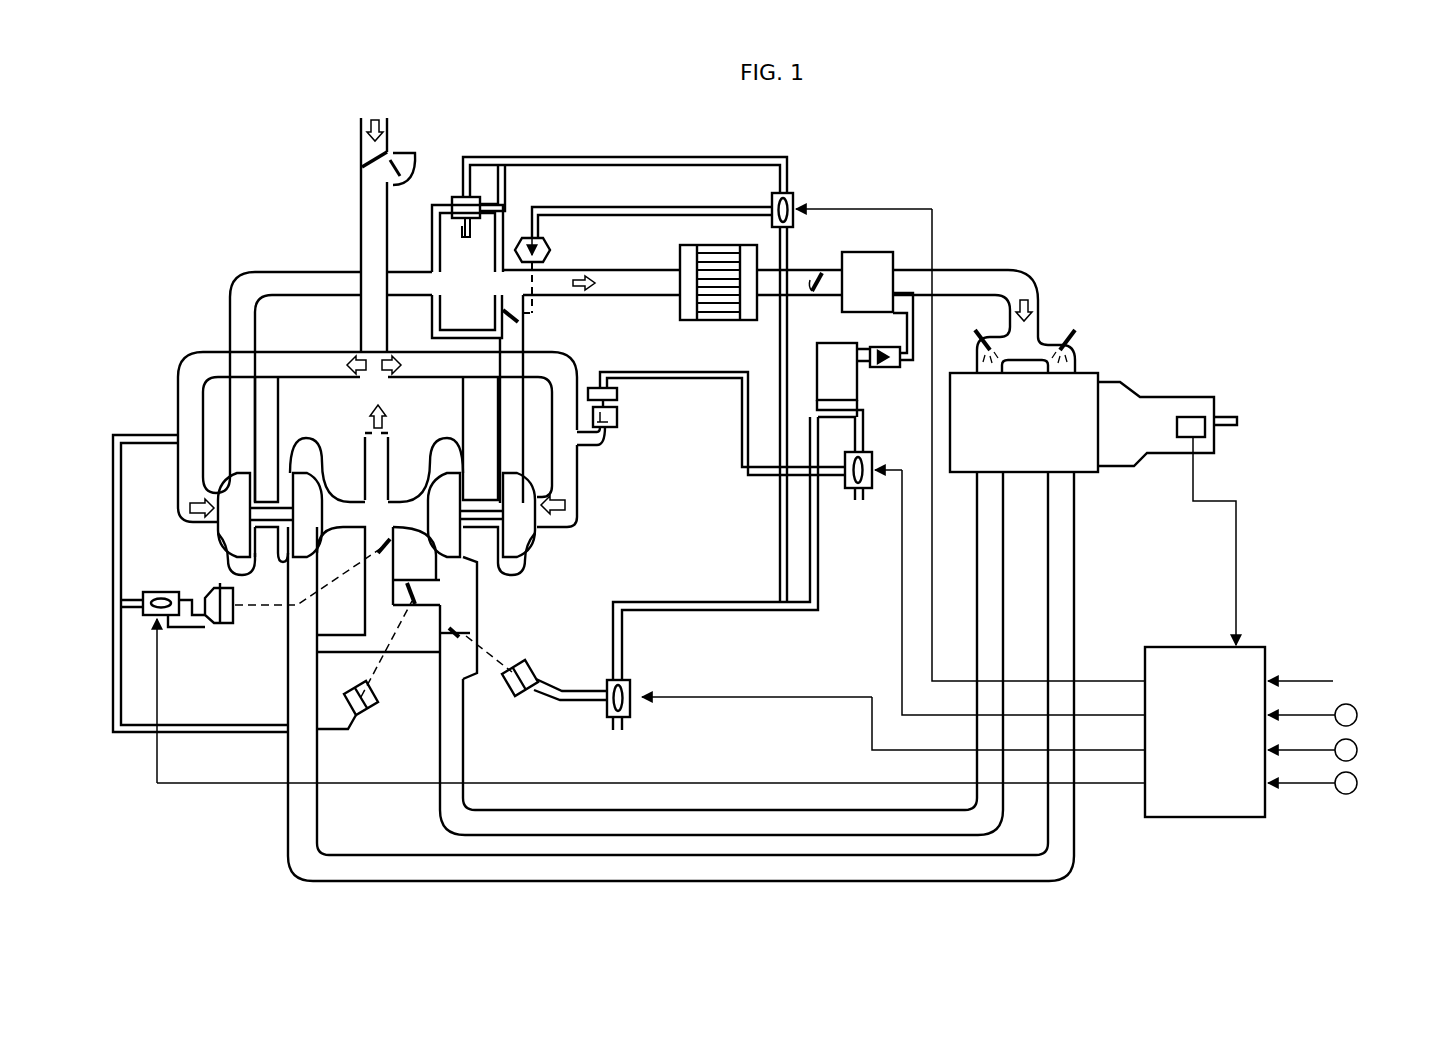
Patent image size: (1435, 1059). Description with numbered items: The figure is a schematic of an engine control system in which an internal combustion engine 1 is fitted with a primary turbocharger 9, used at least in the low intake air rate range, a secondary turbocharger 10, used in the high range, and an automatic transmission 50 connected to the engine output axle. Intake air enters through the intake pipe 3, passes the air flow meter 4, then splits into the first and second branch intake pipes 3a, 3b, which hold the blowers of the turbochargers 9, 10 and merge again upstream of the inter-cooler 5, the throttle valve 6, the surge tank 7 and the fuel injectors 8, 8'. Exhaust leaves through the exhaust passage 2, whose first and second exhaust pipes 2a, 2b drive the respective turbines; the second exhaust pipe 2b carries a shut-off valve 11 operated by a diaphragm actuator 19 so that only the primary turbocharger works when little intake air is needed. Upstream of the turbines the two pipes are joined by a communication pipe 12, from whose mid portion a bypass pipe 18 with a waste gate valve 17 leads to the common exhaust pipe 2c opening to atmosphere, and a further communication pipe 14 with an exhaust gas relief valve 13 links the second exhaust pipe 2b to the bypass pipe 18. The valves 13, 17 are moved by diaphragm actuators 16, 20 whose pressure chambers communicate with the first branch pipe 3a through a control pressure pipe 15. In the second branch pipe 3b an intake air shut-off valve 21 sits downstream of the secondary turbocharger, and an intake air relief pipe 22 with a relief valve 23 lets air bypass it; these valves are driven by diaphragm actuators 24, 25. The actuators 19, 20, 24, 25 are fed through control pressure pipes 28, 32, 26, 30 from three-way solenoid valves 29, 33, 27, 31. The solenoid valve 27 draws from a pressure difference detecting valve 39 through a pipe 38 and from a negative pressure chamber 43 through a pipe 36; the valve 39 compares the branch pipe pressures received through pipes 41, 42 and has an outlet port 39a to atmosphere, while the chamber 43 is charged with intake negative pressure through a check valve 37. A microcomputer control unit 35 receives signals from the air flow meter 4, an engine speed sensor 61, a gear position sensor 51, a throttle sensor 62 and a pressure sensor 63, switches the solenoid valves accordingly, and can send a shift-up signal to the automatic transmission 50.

The internal combustion engine 1 is at (1024, 422).
The exhaust passage 2 is at (1143, 547).
The first exhaust pipe 2a is at (288, 693).
The second exhaust pipe 2b is at (465, 752).
The common exhaust pipe 2c is at (392, 440).
The intake pipe 3 is at (361, 197).
The first branch intake pipe 3a is at (230, 298).
The second branch intake pipe 3b is at (575, 357).
The air flow meter 4 is at (412, 150).
The inter-cooler 5 is at (706, 320).
The throttle valve 6 is at (818, 277).
The surge tank 7 is at (858, 252).
The fuel injectors 8 is at (969, 346).
The fuel injector 8' is at (1063, 318).
The primary supercharger 9 is at (272, 495).
The secondary supercharger 10 is at (481, 492).
The shut-off valve 11 is at (472, 634).
The communication pipe 12 is at (412, 653).
The exhaust gas relief valve 13 is at (420, 598).
The communication pipe 14 is at (432, 578).
The control pressure pipe 15 is at (121, 481).
The diaphragm actuator 16 is at (354, 695).
The waste gate valve 17 is at (383, 546).
The bypass pipe 18 is at (367, 616).
The diaphragm actuator 19 is at (519, 699).
The diaphragm actuator 20 is at (236, 628).
The intake air shut-off valve 21 is at (505, 314).
The intake air relief pipe 22 is at (600, 448).
The relief valve 23 is at (617, 440).
The diaphragm actuator 24 is at (551, 247).
The diaphragm actuator 25 is at (618, 395).
The control pressure pipe 26 is at (620, 207).
The three-way solenoid valve 27 is at (772, 205).
The control pressure pipe 28 is at (578, 690).
The three-way solenoid valve 29 is at (632, 686).
The control pressure pipe 30 is at (750, 477).
The three-way solenoid valve 31 is at (872, 456).
The control pressure pipe 32 is at (183, 630).
The three-way solenoid valve 33 is at (160, 592).
The control unit 35 is at (1201, 818).
The pipe 36 is at (780, 362).
The check valve 37 is at (870, 352).
The pipe 38 is at (662, 157).
The pressure difference detecting valve 39 is at (455, 197).
The outlet port 39a is at (469, 244).
The pipe 41 is at (500, 196).
The pipe 42 is at (432, 249).
The negative pressure chamber 43 is at (857, 380).
The automatic transmission 50 is at (1172, 394).
The gear position sensor 51 is at (1177, 428).
The engine speed sensor 61 is at (1357, 715).
The throttle sensor 62 is at (1357, 750).
The pressure sensor 63 is at (1357, 783).